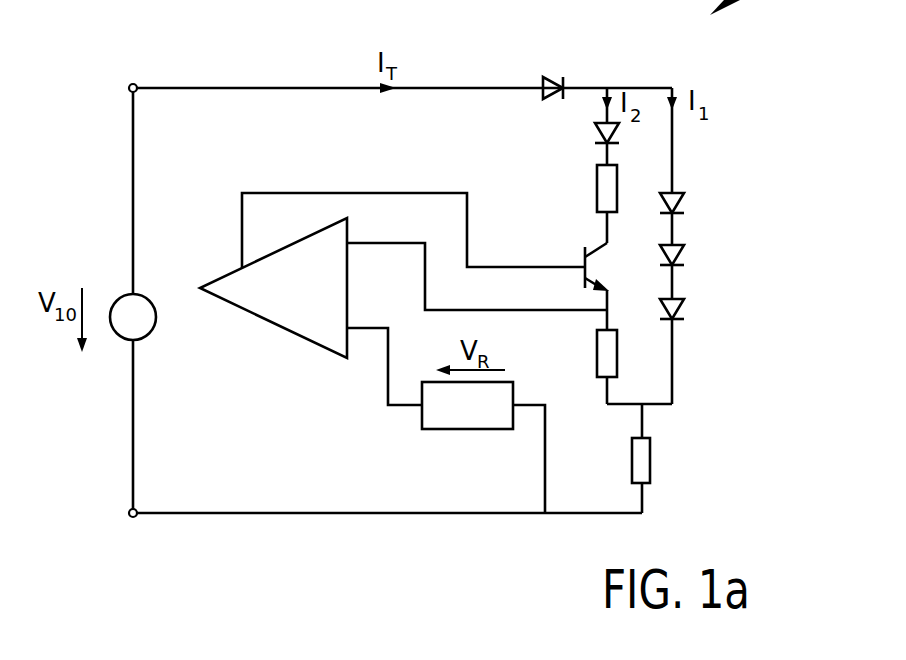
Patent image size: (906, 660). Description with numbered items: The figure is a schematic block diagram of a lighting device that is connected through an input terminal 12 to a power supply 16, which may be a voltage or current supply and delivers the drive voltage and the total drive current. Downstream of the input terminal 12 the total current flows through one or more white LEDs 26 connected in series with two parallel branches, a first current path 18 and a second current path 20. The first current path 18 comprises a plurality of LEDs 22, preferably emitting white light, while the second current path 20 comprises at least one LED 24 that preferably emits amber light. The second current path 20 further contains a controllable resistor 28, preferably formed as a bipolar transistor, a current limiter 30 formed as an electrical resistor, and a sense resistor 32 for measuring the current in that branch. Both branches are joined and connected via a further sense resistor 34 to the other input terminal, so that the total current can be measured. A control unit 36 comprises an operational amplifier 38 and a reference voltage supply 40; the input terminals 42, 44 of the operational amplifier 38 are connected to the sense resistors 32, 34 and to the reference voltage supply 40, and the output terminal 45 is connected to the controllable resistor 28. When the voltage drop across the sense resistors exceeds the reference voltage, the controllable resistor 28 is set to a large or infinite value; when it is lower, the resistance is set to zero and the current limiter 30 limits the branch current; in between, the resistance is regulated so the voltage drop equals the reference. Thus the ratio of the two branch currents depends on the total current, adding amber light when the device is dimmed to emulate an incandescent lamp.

The input terminal 12 is at (130, 85).
The power supply 16 is at (126, 340).
The first current path 18 is at (674, 152).
The second current path 20 is at (570, 164).
The LEDs 22 is at (686, 255).
The LED 24 is at (597, 132).
The white LED 26 is at (553, 76).
The controllable resistor 28 is at (582, 252).
The current limiter 30 is at (598, 186).
The sense resistor 32 is at (597, 363).
The sense resistor 34 is at (652, 458).
The control unit 36 is at (403, 317).
The operational amplifier 38 is at (305, 340).
The reference voltage supply 40 is at (474, 431).
The input terminal of the operational amplifier 42 is at (426, 312).
The input terminal of the operational amplifier 44 is at (387, 403).
The output terminal of the operational amplifier 45 is at (274, 193).